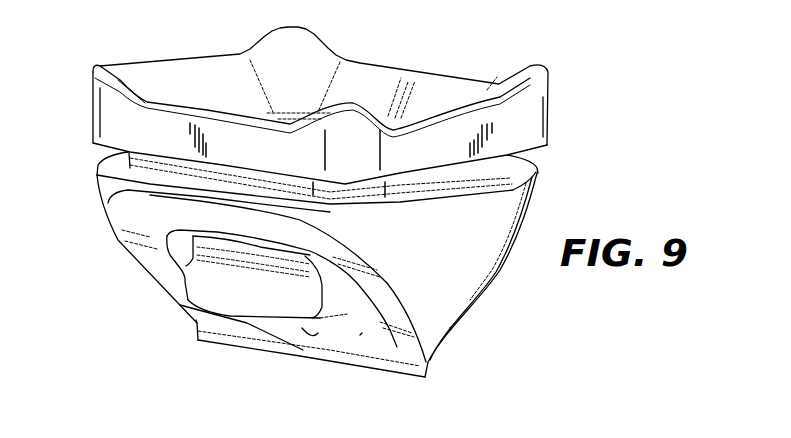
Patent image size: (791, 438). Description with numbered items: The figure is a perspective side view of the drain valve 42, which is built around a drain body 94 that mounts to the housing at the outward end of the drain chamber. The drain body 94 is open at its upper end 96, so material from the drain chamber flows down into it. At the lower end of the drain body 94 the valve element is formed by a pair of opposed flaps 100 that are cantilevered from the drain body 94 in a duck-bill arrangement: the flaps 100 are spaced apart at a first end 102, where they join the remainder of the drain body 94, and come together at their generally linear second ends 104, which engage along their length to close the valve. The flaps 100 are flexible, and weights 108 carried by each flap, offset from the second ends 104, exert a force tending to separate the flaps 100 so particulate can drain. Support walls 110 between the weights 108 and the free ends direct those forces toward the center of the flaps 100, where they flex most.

The drain valve 42 is at (586, 108).
The drain body 94 is at (503, 200).
The upper end 96 is at (431, 75).
The flaps 100 is at (360, 335).
The first end 102 is at (167, 212).
The second ends 104 is at (196, 338).
The weights 108 is at (243, 295).
The support walls 110 is at (300, 330).